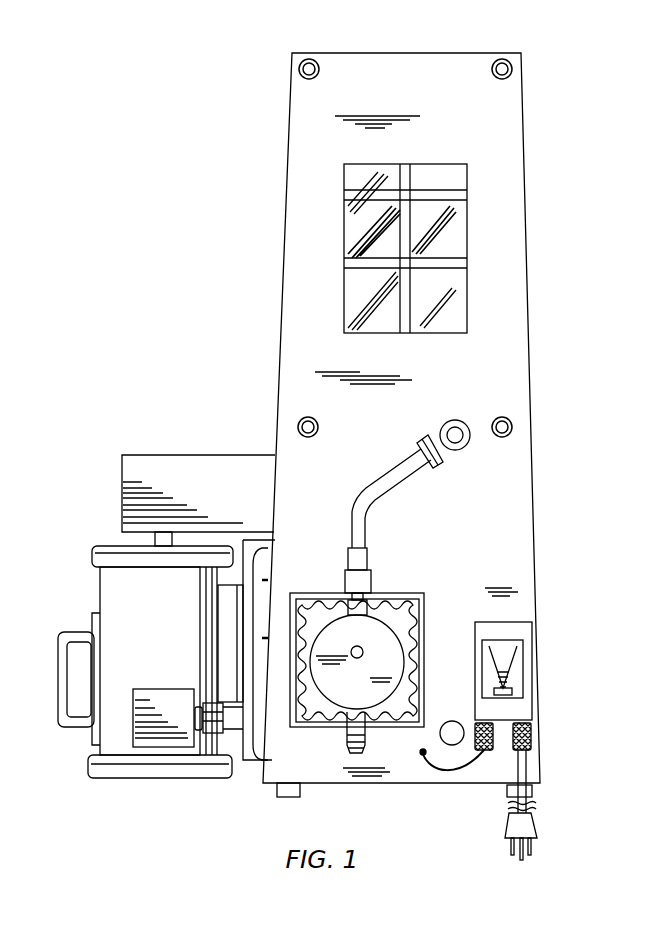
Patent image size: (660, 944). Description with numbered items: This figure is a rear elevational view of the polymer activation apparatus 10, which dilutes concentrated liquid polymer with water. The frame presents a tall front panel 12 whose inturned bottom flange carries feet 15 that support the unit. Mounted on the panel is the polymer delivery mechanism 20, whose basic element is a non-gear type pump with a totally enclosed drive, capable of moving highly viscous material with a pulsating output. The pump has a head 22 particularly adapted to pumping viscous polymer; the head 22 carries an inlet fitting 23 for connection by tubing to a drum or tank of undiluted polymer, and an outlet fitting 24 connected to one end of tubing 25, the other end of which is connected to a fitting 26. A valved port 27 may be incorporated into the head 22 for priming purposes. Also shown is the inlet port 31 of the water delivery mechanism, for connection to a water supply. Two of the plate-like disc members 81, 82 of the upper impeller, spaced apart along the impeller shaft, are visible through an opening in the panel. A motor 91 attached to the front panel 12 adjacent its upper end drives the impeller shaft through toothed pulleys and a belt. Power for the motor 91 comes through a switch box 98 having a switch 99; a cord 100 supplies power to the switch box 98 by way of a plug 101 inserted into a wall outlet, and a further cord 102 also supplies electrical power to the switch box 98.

The polymer activation apparatus 10 is at (568, 181).
The front panel 12 is at (522, 293).
The feet 15 is at (280, 793).
The polymer delivery mechanism 20 is at (452, 596).
The head 22 is at (398, 657).
The inlet fitting 23 is at (346, 752).
The outlet fitting 24 is at (358, 592).
The tubing 25 is at (415, 466).
The fitting 26 is at (460, 447).
The valved port 27 is at (361, 648).
The inlet port 31 is at (452, 721).
The disc member 81 is at (443, 268).
The disc member 82 is at (441, 202).
The motor 91 is at (118, 616).
The switch box 98 is at (518, 710).
The switch 99 is at (505, 664).
The cord 100 is at (522, 764).
The plug 101 is at (528, 826).
The cord 102 is at (462, 773).